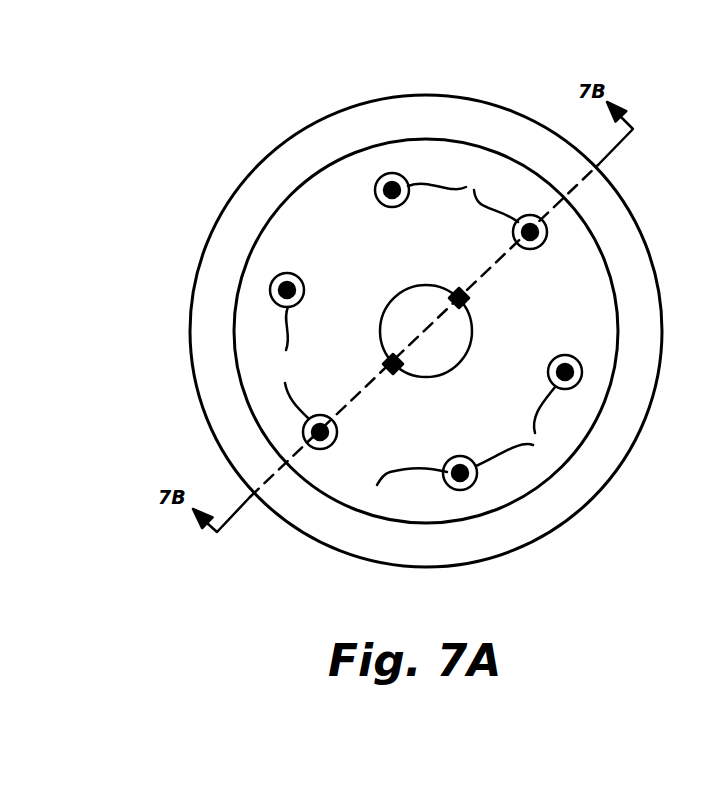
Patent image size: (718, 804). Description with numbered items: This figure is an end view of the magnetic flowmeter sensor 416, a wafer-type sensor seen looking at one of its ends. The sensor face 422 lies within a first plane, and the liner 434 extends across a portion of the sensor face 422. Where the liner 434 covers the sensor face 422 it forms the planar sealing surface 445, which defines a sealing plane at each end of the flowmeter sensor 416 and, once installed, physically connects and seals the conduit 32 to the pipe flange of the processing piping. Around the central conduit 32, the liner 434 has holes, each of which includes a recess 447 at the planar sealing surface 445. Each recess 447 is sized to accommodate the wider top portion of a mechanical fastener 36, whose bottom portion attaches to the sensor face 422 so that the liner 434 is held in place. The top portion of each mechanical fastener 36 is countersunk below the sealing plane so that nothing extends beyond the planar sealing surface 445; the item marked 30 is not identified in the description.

The magnetic flowmeter sensor 416 is at (504, 98).
The liner 434 is at (538, 511).
The sensor face 422 is at (612, 432).
The planar sealing surface 445 is at (388, 255).
The conduit 32 is at (454, 358).
The section markers 30 is at (455, 300).
The mechanical fastener 36 is at (416, 322).
The recess 447 is at (403, 205).